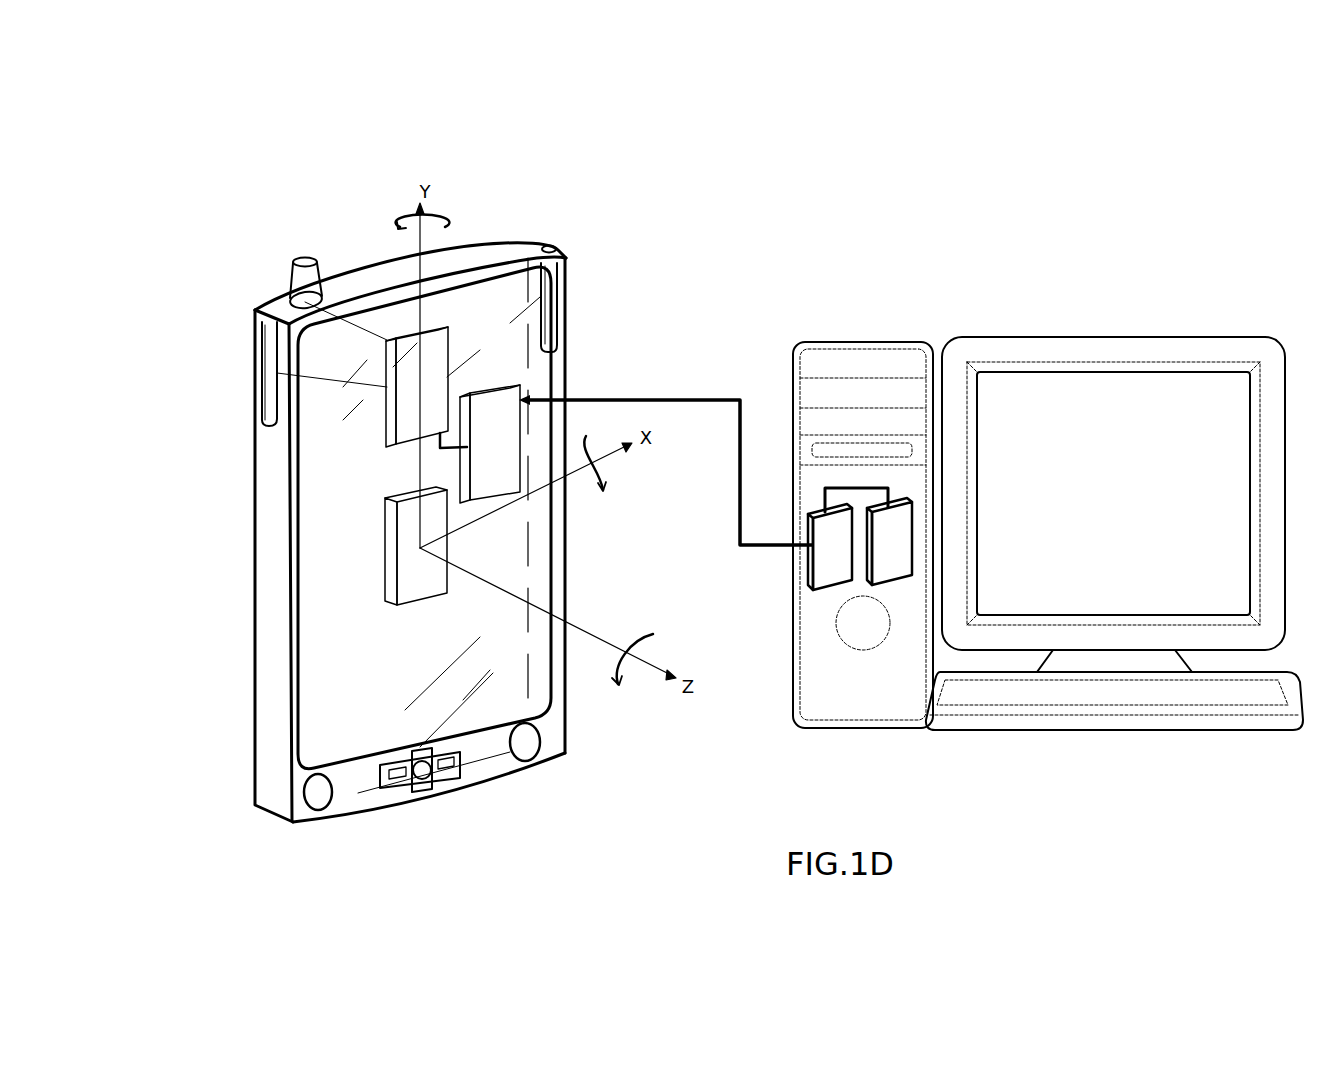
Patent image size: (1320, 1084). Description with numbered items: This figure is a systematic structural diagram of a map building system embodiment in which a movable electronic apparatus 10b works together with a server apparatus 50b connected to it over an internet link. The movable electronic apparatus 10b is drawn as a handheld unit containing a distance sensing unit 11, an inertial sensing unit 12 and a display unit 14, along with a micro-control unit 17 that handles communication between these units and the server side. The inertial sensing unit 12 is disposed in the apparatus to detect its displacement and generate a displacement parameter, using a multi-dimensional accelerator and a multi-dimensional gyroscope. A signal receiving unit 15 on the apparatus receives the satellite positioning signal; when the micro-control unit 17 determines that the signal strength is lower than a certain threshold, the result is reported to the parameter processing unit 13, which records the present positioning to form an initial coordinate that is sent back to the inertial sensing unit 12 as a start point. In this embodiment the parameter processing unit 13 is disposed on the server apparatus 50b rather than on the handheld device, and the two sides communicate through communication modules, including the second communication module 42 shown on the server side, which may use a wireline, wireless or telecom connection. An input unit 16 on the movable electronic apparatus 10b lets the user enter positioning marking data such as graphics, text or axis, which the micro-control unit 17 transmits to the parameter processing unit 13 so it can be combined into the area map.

The movable electronic apparatus 10b is at (517, 218).
The distance sensing unit 11 is at (264, 338).
The inertial sensing unit 12 is at (387, 553).
The parameter processing unit 13 is at (912, 502).
The display unit 14 is at (313, 651).
The signal receiving unit 15 is at (305, 262).
The input unit 16 is at (430, 782).
The micro-control unit 17 is at (413, 332).
The second communication module 42 is at (812, 510).
The computer 50b is at (1125, 263).